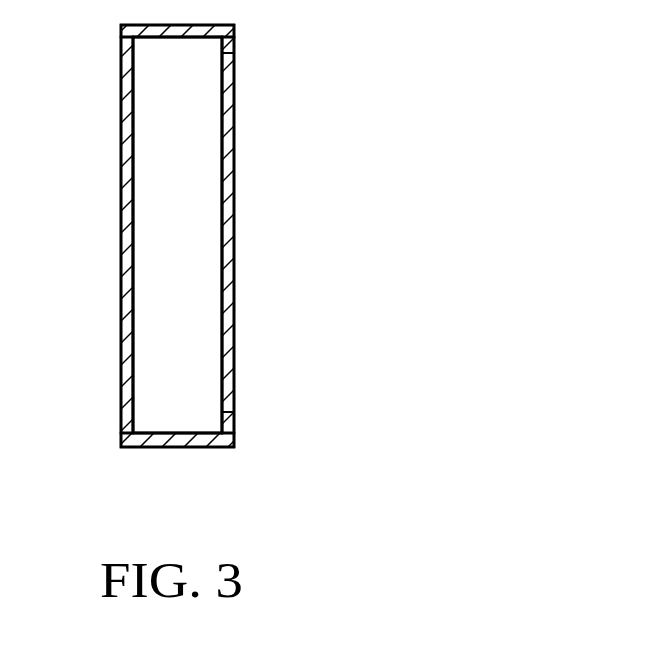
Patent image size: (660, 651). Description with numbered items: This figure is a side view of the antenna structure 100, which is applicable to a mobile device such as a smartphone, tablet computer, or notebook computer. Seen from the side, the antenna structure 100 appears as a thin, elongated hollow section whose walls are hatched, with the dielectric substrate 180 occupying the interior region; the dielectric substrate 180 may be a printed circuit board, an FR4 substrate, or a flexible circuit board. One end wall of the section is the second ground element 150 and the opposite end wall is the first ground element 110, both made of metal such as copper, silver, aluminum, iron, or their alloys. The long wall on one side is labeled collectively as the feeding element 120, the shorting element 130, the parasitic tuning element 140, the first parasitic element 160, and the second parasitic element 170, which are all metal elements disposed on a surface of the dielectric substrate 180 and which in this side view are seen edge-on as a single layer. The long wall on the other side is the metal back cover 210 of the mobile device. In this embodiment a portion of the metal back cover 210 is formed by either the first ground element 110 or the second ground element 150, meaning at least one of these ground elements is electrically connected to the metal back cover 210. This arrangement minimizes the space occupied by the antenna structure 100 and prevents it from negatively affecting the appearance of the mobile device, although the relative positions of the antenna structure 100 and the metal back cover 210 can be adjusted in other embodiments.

The antenna structure 100 is at (253, 300).
The first ground element 110 is at (234, 428).
The feeding element 120 is at (418, 241).
The shorting element 130 is at (418, 241).
The parasitic tuning element 140 is at (418, 241).
The second ground element 150 is at (234, 41).
The first parasitic element 160 is at (418, 241).
The second parasitic element 170 is at (234, 217).
The dielectric substrate 180 is at (157, 237).
The metal back cover 210 is at (121, 118).